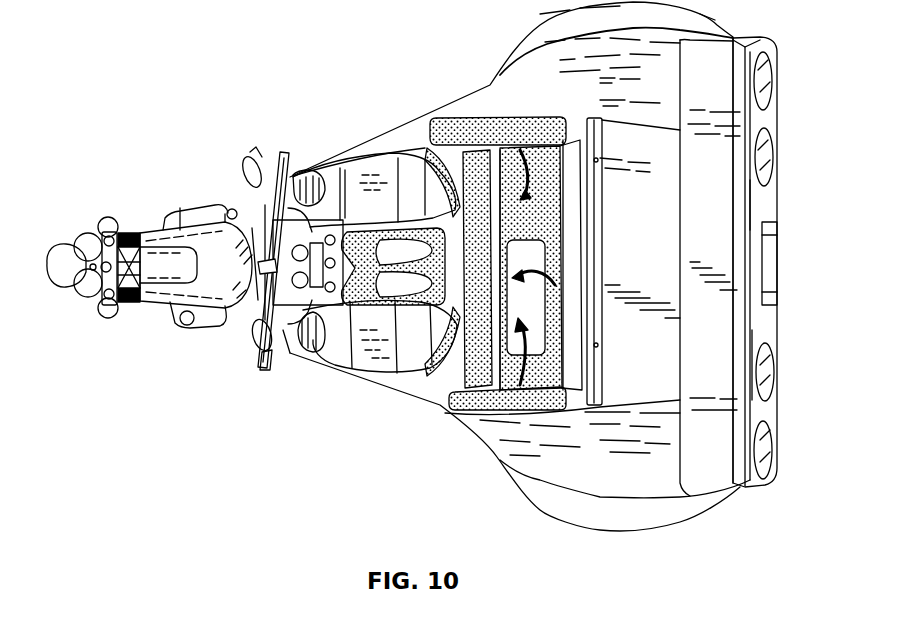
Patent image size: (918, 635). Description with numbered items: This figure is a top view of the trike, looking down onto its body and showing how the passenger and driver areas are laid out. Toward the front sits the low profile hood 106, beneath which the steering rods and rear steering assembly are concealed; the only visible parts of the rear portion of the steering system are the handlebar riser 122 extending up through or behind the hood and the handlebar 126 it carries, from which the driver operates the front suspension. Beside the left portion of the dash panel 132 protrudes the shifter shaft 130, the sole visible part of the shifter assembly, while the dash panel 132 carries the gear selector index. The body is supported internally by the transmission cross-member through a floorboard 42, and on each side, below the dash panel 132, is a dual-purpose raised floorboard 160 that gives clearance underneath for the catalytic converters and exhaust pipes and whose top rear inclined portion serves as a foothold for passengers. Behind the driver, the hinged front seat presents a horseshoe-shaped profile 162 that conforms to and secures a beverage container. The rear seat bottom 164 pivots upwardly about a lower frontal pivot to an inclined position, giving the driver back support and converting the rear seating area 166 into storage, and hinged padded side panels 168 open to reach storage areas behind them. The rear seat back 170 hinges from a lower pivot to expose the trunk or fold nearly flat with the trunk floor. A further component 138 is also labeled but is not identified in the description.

The floorboard 42 is at (410, 173).
The hood 106 is at (143, 245).
The handlebar riser 122 is at (263, 263).
The handlebar 126 is at (257, 280).
The shifter shaft 130 is at (305, 318).
The dash panel 132 is at (277, 282).
The control block 138 is at (247, 260).
The raised floorboard 160 is at (373, 185).
The horseshoe-shaped profile 162 is at (343, 220).
The rear seat bottom 164 is at (466, 160).
The rear seating area 166 is at (533, 307).
The padded side panels 168 is at (491, 118).
The rear seat back 170 is at (578, 392).